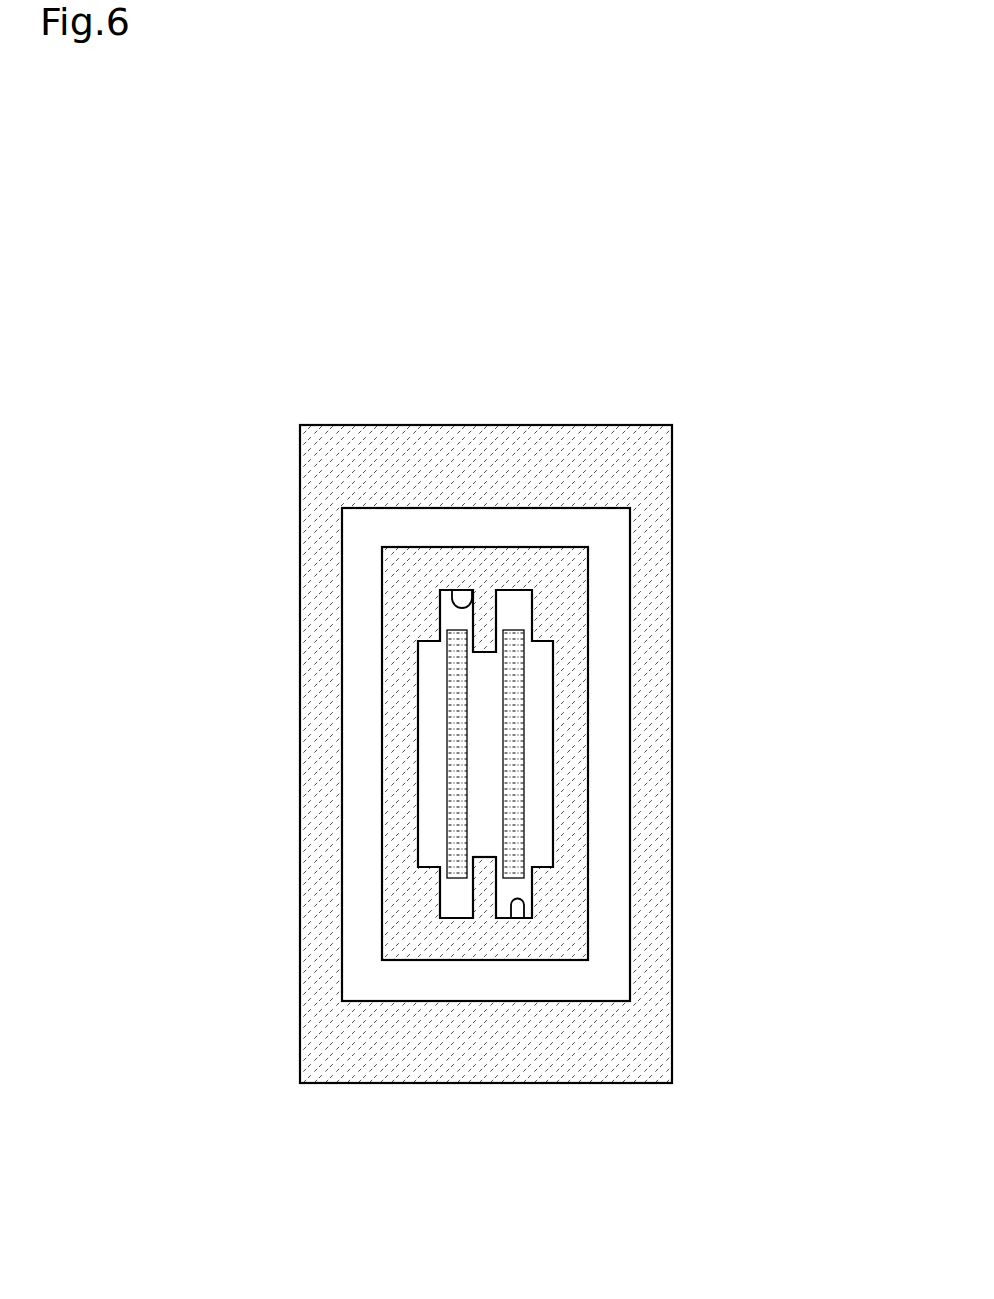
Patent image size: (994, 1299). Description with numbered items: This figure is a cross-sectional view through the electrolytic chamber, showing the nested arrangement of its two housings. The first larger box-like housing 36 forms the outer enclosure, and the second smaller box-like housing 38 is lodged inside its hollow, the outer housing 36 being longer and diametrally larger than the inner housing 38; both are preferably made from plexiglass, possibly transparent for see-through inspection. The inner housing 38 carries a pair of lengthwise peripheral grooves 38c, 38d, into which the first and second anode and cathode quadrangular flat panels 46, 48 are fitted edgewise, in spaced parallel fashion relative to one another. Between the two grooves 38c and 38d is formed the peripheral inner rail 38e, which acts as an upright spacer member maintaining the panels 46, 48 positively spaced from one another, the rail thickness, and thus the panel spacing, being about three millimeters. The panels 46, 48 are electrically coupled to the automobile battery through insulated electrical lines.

The first larger box-like housing 36 is at (652, 453).
The second smaller box-like housing 38 is at (572, 823).
The lengthwise peripheral groove 38c is at (466, 590).
The lengthwise peripheral groove 38d is at (520, 908).
The peripheral inner rail 38e is at (485, 884).
The anode quadrangular flat panel 46 is at (458, 744).
The cathode quadrangular flat panel 48 is at (518, 767).